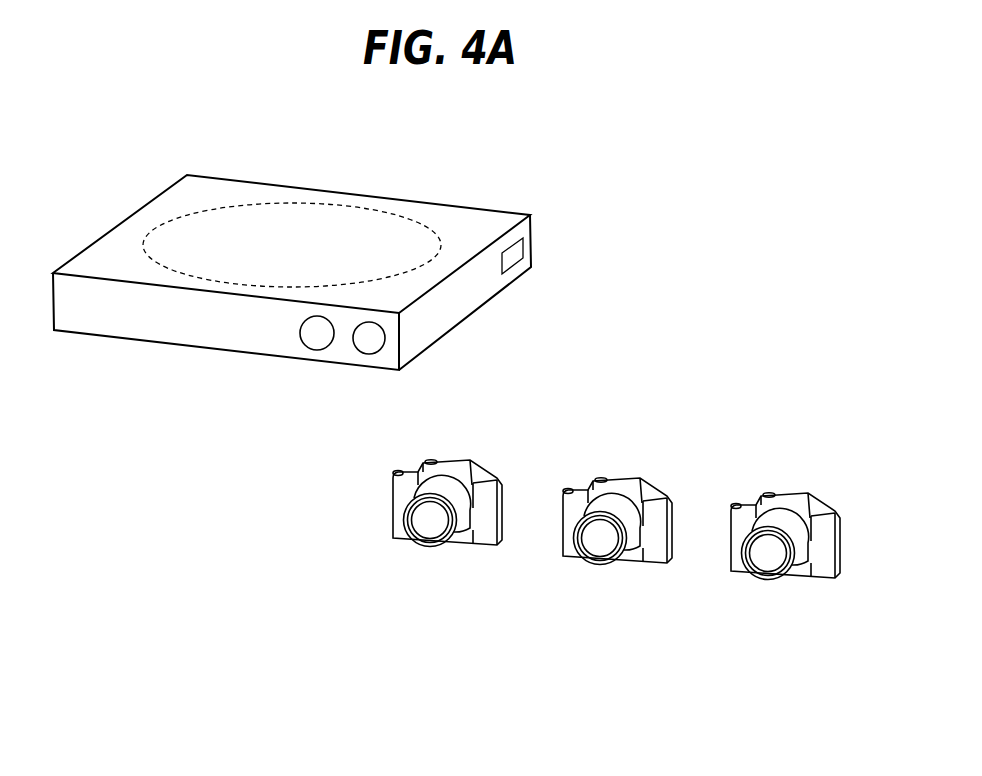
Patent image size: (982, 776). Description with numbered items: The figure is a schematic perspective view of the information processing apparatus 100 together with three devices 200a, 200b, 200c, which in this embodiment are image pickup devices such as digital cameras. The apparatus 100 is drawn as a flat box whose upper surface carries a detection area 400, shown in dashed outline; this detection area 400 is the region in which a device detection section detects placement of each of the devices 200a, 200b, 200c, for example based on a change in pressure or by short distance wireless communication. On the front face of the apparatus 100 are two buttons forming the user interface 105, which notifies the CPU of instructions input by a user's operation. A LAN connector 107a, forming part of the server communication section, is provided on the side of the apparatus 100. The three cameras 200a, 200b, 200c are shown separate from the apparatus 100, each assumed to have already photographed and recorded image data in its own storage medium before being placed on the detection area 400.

The information processing apparatus 100 is at (433, 200).
The detection area 400 is at (270, 203).
The LAN connector 107a is at (518, 257).
The user interface 105 is at (367, 342).
The device 200a is at (397, 525).
The device 200b is at (563, 540).
The device 200c is at (733, 558).